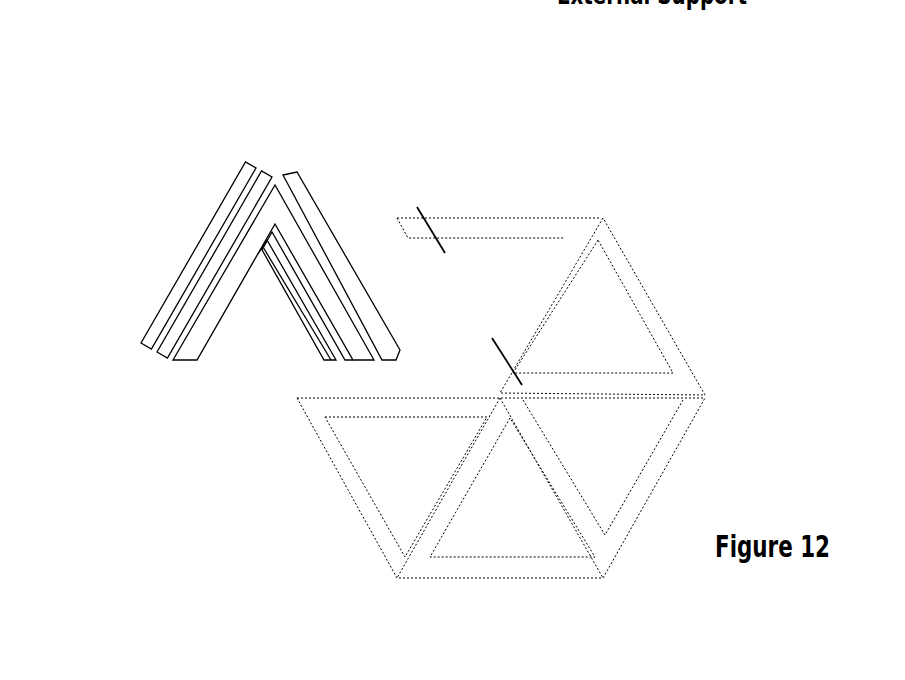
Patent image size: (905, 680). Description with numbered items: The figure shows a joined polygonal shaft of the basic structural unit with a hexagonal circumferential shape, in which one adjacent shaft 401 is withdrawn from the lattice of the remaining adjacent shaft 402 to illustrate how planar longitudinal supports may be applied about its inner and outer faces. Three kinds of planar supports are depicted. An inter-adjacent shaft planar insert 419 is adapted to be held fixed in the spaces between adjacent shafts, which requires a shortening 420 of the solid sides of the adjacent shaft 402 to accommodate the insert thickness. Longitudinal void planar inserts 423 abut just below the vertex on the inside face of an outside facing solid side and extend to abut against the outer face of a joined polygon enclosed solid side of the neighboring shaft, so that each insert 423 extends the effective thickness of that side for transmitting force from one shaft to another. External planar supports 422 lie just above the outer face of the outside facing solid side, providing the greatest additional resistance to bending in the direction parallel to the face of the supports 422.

The adjacent shaft 401 is at (178, 367).
The adjacent shaft 402 is at (582, 223).
The inter-adjacent shaft planar insert 419 is at (317, 197).
The shortening 420 is at (495, 343).
The external planar supports 422 is at (267, 163).
The longitudinal void planar inserts 423 is at (342, 360).